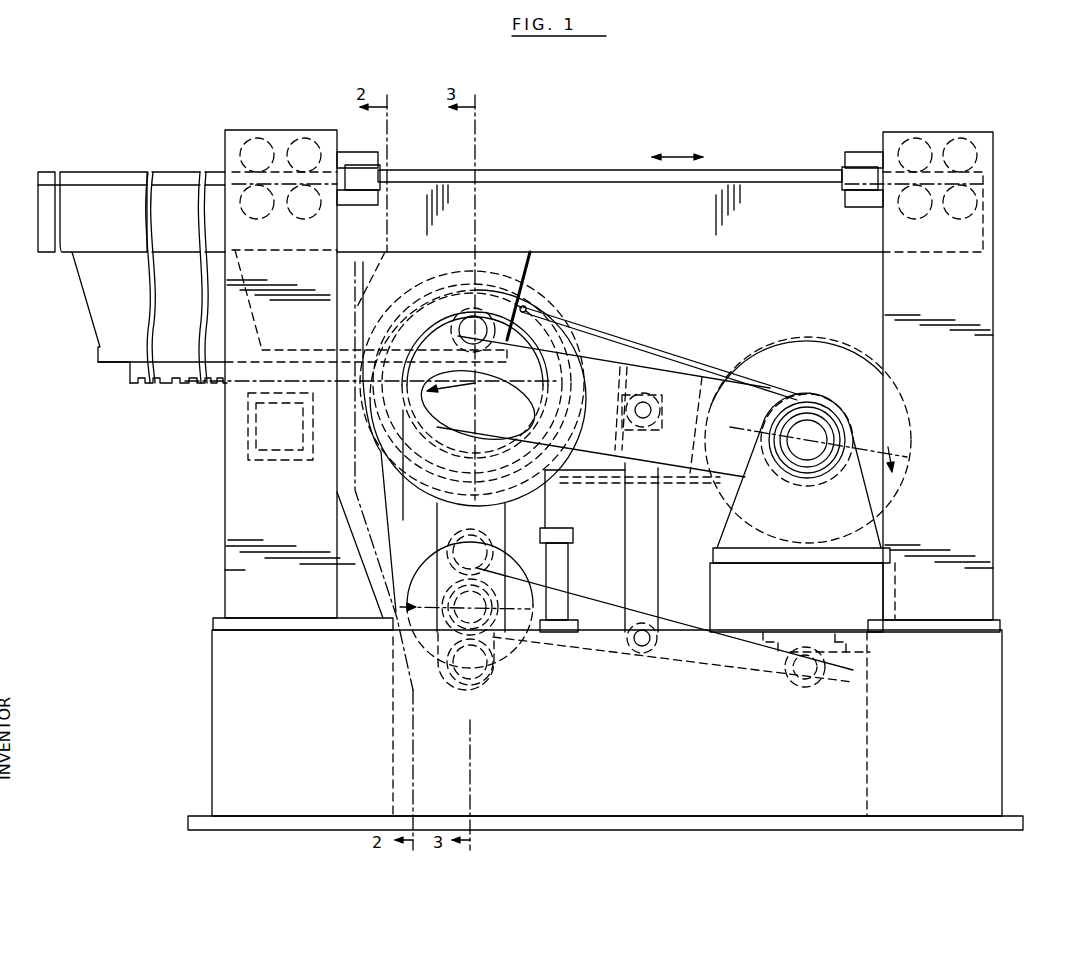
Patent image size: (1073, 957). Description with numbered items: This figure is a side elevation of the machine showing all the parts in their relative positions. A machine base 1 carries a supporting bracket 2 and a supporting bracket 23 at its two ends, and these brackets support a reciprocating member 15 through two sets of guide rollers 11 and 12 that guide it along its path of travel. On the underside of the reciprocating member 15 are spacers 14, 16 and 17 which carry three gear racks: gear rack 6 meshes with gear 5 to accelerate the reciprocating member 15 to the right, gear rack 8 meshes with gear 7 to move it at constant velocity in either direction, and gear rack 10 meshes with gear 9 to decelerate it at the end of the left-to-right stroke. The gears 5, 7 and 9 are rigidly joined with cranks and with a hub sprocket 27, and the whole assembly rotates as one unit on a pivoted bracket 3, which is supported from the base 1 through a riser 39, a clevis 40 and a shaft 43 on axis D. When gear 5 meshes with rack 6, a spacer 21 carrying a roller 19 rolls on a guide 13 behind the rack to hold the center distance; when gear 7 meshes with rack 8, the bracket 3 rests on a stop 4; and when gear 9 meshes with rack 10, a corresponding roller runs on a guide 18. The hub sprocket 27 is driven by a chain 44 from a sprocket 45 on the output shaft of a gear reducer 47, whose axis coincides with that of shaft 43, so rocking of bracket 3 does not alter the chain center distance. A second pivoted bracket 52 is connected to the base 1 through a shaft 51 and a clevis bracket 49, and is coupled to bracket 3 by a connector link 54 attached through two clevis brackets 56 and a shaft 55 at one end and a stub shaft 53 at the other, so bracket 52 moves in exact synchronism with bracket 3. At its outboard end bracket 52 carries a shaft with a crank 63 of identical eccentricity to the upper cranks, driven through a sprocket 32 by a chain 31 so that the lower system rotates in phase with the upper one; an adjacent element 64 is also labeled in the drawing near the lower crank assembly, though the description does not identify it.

The machine base 1 is at (993, 762).
The supporting bracket 2 is at (225, 497).
The pivoted bracket 3 is at (617, 359).
The stop 4 is at (894, 453).
The gear 5 is at (512, 420).
The gear rack 6 is at (354, 390).
The gear 7 is at (392, 446).
The gear rack 8 is at (180, 387).
The gear 9 is at (556, 306).
The gear rack 10 is at (137, 386).
The guide rollers 11 is at (292, 140).
The guide rollers 12 is at (382, 172).
The guide 13 is at (492, 380).
The spacer 14 is at (528, 270).
The reciprocating member 15 is at (605, 172).
The spacer 16 is at (184, 326).
The spacer 17 is at (80, 282).
The guide 18 is at (114, 366).
The roller 19 is at (460, 337).
The spacer 21 is at (458, 700).
The supporting bracket 23 is at (996, 443).
The hub sprocket 27 is at (357, 447).
The chain 31 is at (549, 493).
The sprocket 32 is at (518, 562).
The riser 39 is at (712, 604).
The clevis 40 is at (732, 534).
The shaft 43 is at (818, 428).
The chain 44 is at (673, 352).
The sprocket 45 is at (792, 488).
The gear reducer 47 is at (784, 346).
The clevis bracket 49 is at (831, 648).
The shaft 51 is at (802, 696).
The second pivoted bracket 52 is at (690, 672).
The stub shaft 53 is at (638, 652).
The connector link 54 is at (648, 576).
The shaft 55 is at (654, 408).
The clevis brackets 56 is at (630, 380).
The crank 63 is at (513, 660).
The rod 64 is at (440, 562).